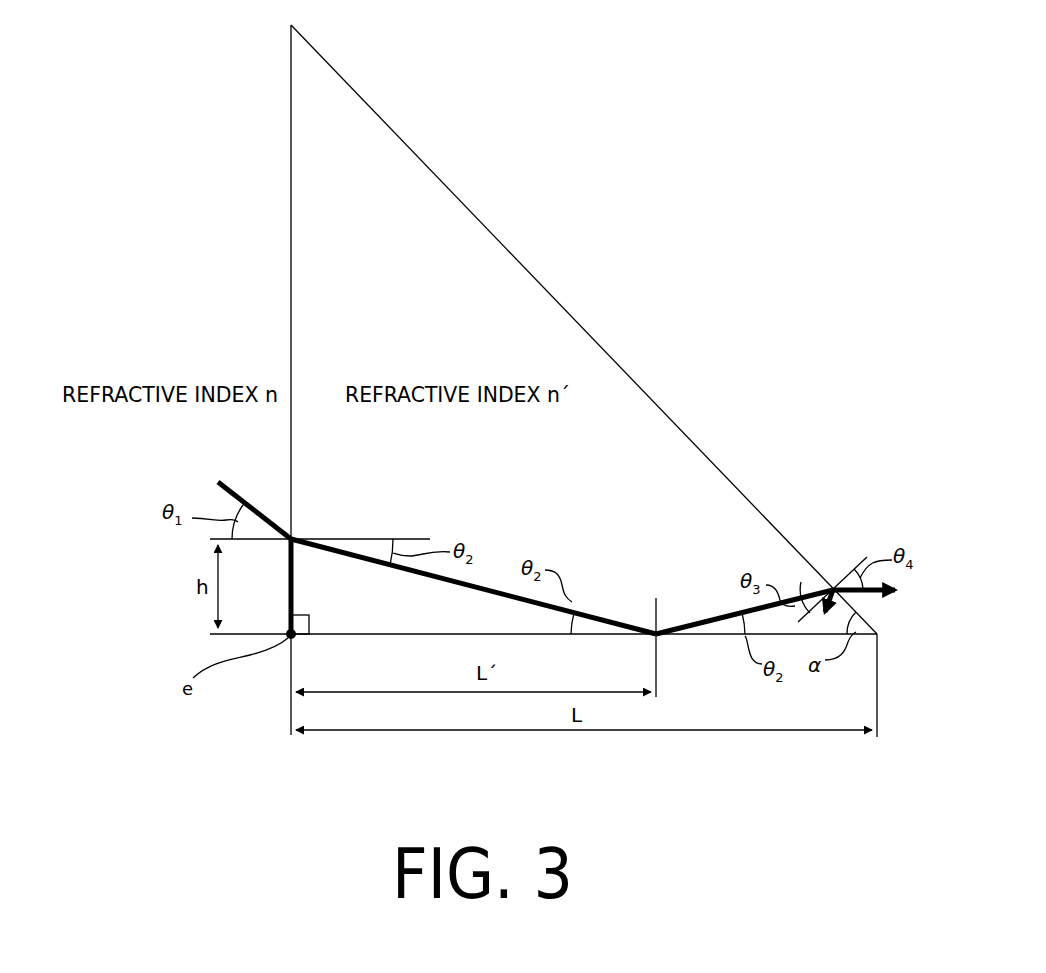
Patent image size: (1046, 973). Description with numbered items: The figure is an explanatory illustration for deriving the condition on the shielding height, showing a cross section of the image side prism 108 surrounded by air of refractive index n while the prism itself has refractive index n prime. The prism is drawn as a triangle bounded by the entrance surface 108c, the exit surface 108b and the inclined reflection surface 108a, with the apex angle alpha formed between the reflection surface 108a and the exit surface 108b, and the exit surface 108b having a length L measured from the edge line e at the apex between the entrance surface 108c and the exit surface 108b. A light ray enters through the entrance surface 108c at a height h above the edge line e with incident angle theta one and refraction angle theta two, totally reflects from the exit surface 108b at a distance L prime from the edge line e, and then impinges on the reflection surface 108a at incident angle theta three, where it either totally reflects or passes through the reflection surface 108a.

The image side prism 108 is at (519, 386).
The reflection surface 108a is at (560, 300).
The exit surface 108b is at (367, 634).
The entrance surface 108c is at (290, 213).